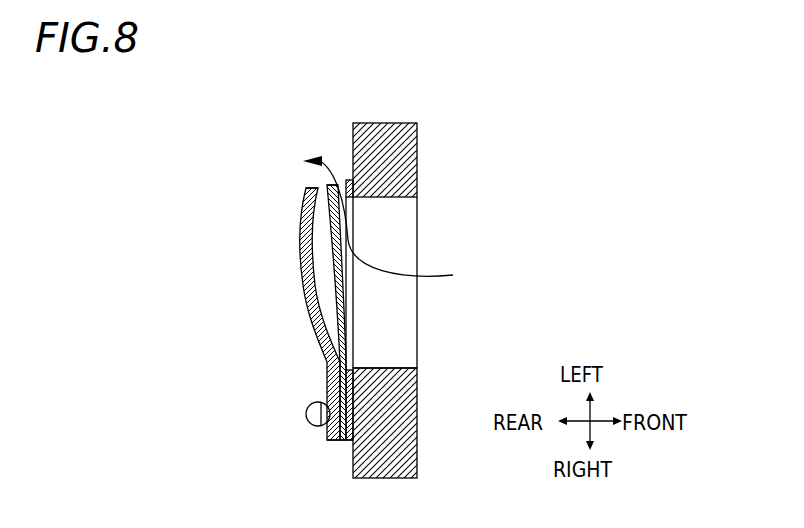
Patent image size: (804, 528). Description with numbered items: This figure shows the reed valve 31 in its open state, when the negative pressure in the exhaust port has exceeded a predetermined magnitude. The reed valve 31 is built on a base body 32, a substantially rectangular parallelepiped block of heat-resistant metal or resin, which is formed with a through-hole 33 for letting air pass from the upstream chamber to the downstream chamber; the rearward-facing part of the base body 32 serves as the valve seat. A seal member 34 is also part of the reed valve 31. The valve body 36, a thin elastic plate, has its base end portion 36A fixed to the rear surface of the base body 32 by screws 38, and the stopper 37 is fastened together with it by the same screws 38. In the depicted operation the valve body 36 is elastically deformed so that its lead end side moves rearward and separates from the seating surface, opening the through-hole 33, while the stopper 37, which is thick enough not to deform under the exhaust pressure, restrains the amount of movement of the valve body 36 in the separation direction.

The reed valve 31 is at (433, 121).
The base body 32 is at (413, 412).
The through-hole 33 is at (390, 367).
The seal member 34 is at (347, 179).
The valve body 36 is at (330, 260).
The base end portion of the valve body 36A is at (330, 205).
The stopper 37 is at (310, 307).
The screws 38 is at (309, 403).